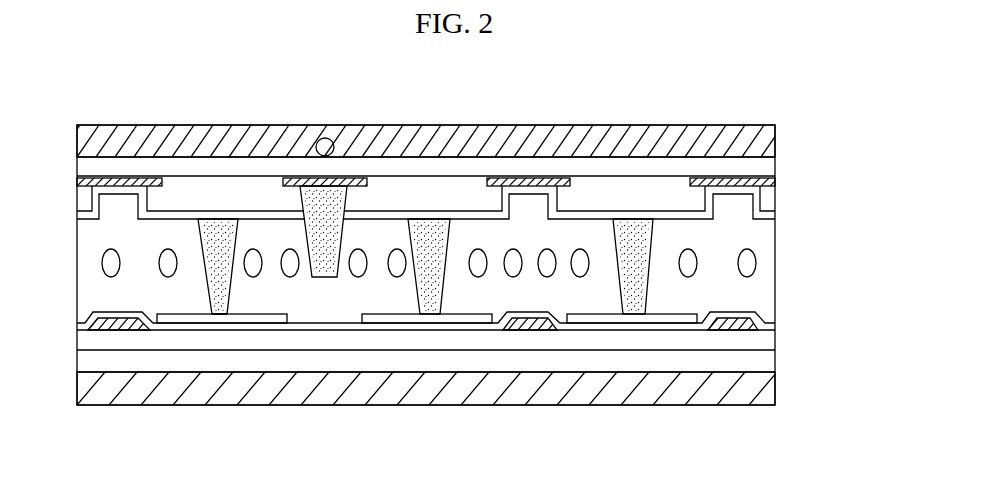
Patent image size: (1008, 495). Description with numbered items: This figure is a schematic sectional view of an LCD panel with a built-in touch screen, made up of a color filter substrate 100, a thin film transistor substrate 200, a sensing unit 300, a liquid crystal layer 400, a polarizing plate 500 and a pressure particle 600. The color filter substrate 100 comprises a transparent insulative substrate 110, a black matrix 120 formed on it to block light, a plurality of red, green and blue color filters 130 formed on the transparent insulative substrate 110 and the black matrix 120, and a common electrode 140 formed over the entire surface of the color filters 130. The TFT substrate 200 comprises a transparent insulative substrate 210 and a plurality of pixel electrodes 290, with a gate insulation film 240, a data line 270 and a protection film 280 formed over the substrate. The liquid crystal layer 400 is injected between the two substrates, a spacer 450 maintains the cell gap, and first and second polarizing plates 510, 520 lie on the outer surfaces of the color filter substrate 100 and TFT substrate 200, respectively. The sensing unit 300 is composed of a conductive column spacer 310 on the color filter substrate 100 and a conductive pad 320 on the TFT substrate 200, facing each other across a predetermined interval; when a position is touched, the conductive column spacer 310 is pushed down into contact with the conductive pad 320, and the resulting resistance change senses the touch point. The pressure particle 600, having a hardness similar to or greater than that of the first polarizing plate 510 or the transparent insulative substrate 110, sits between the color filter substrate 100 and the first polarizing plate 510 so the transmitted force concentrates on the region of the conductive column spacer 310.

The color filter substrate 100 is at (490, 198).
The transparent insulative substrate 110 is at (768, 166).
The black matrix 120 is at (768, 181).
The red, green and blue color filters 130 is at (688, 203).
The common electrode 140 is at (710, 216).
The thin film transistor (TFT) substrate 200 is at (490, 319).
The transparent insulative substrate 210 is at (768, 362).
The gate insulation film 240 is at (768, 345).
The data line 270 is at (750, 326).
The protection film 280 is at (727, 313).
The pixel electrodes 290 is at (676, 314).
The sensing unit 300 is at (389, 322).
The conductive column spacer 310 is at (313, 203).
The conductive pad 320 is at (312, 282).
The liquid crystal layer 400 is at (102, 259).
The spacer 450 is at (207, 312).
The polarizing plate 500 is at (459, 307).
The first polarizing plate 510 is at (768, 138).
The second polarizing plate 520 is at (768, 390).
The pressure particle 600 is at (316, 146).